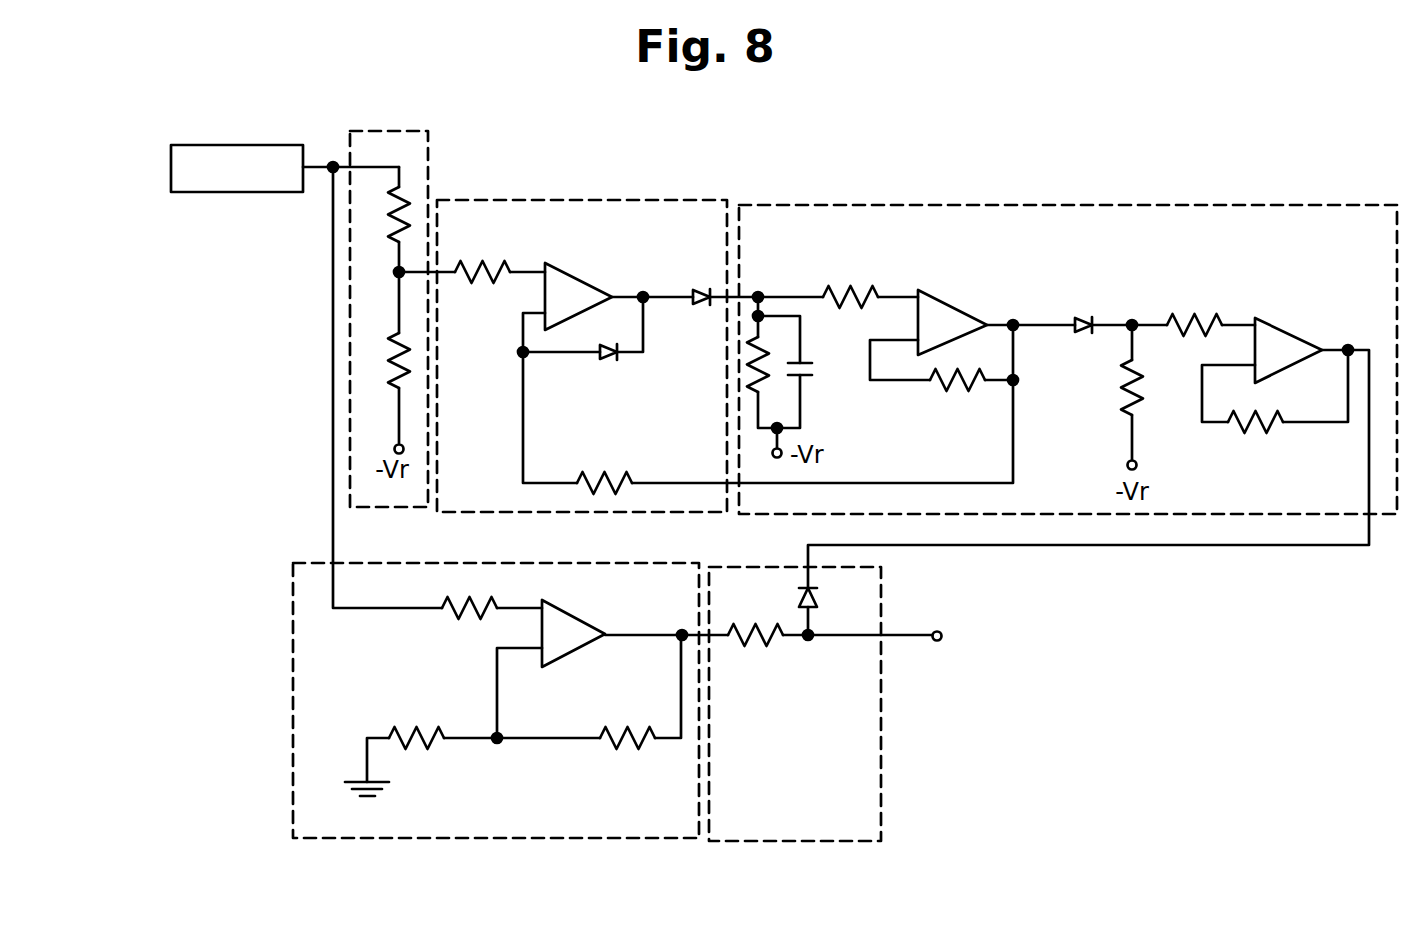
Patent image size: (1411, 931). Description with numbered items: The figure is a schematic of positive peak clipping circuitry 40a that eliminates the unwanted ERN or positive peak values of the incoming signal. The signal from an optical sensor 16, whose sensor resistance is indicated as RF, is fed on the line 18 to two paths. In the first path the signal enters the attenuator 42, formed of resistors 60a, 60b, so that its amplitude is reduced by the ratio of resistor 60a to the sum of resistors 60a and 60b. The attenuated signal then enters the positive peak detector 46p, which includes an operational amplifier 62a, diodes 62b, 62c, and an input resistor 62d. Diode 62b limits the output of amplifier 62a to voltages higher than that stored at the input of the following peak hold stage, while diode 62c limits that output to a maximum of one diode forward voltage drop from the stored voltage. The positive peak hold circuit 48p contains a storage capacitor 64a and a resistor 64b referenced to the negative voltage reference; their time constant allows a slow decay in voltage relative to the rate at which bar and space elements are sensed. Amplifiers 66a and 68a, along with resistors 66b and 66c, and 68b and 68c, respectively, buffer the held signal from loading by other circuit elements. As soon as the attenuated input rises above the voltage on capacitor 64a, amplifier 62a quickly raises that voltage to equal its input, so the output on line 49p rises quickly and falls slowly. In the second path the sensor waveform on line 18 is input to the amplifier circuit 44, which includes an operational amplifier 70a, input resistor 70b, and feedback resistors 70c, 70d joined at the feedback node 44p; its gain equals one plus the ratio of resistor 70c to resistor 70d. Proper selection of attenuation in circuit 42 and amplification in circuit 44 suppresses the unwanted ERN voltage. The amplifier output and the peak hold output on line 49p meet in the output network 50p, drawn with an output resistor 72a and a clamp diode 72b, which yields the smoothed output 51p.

The optical sensor 16 is at (290, 192).
The line 18 is at (333, 165).
The sensor resistance RF is at (158, 176).
The positive peak clipping circuitry 40a is at (1052, 119).
The attenuator 42 is at (428, 131).
The amplifier circuit 44 is at (528, 838).
The feedback node 44p is at (497, 747).
The positive peak detector 46p is at (592, 200).
The positive peak hold circuit 48p is at (913, 207).
The line 49p is at (1172, 547).
The output network 50p is at (881, 807).
The smoothed output 51p is at (913, 633).
The resistor 60a is at (393, 198).
The resistor 60b is at (392, 344).
The operational amplifier 62a is at (588, 283).
The diode 62b is at (692, 291).
The diode 62c is at (606, 362).
The input resistor 62d is at (467, 265).
The storage capacitor 64a is at (815, 368).
The resistor 64b is at (742, 360).
The amplifier 66a is at (958, 318).
The resistor 66b is at (873, 290).
The resistor 66c is at (952, 390).
The amplifier 68a is at (1293, 333).
The resistor 68b is at (1202, 322).
The resistor 68c is at (1250, 432).
The operational amplifier 70a is at (580, 623).
The input resistor 70b is at (452, 618).
The feedback resistor 70c is at (640, 735).
The feedback resistor 70d is at (437, 733).
The output resistor 72a is at (760, 643).
The clamp diode 72b is at (800, 597).